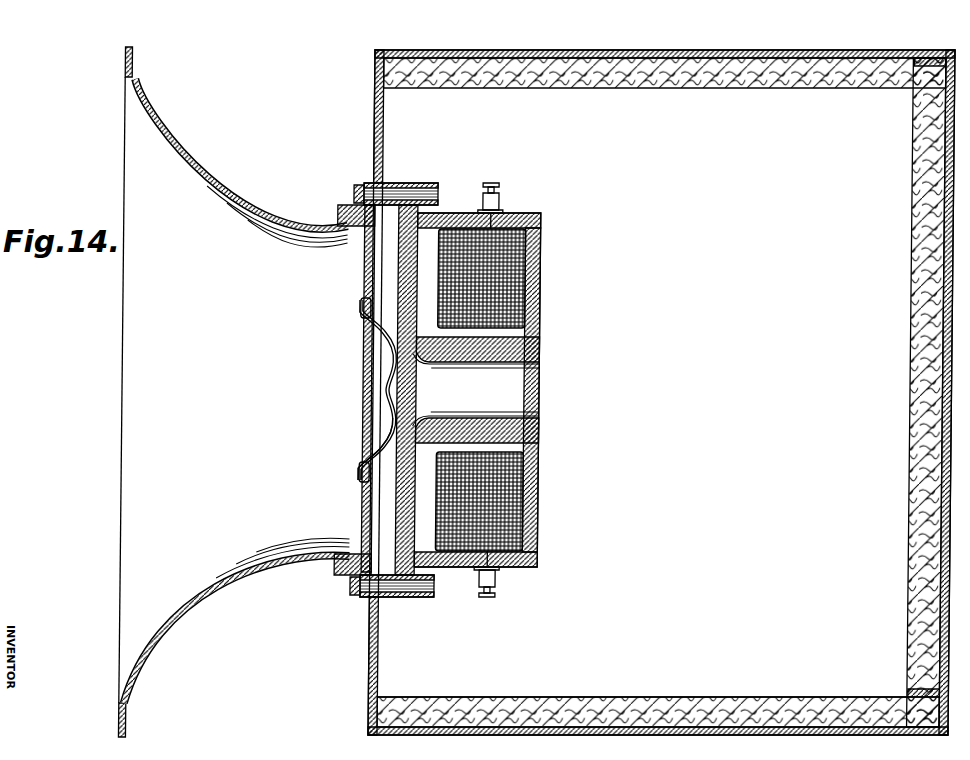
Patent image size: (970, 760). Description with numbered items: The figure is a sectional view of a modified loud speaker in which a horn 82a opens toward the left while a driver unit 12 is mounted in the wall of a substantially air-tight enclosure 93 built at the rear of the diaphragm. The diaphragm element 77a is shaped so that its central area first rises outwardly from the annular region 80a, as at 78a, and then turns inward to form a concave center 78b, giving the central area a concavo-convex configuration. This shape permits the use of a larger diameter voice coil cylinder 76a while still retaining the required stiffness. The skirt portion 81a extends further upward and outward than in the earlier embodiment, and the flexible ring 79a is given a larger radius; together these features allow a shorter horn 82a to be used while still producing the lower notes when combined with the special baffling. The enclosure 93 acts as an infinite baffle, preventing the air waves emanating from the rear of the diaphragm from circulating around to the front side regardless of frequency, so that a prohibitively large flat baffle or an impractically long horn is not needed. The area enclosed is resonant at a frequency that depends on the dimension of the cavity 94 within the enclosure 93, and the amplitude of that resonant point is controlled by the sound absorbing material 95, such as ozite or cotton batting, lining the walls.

The air-tight enclosure 93 is at (712, 50).
The cavity 94 is at (716, 376).
The sound absorbing material 95 is at (660, 695).
The horn 82a is at (212, 186).
The flexible ring 79a is at (366, 253).
The skirt portion 81a is at (362, 316).
The diaphragm element 77a is at (381, 363).
The concave center 78b is at (391, 390).
The outwardly rising portion 78a is at (389, 421).
The annular region 80a is at (378, 430).
The voice coil cylinder 76a is at (377, 463).
The driver unit 12 is at (375, 522).